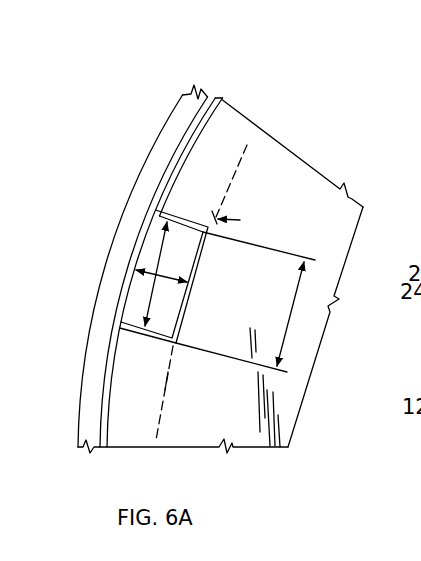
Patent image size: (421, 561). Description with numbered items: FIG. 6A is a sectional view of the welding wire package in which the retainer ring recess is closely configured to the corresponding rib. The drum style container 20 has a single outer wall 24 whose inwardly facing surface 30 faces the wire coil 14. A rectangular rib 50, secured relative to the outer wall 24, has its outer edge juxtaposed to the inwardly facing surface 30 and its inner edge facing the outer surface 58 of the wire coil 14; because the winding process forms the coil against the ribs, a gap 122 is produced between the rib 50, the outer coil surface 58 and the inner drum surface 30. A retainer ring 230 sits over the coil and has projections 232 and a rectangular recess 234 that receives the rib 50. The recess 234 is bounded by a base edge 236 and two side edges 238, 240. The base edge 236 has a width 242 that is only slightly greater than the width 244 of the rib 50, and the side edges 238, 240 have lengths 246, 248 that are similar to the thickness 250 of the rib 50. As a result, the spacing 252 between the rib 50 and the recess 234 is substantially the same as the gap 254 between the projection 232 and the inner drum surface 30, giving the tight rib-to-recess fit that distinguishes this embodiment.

The wire coil 14 is at (303, 168).
The drum style carton or container 20 is at (152, 145).
The outer wall 24 is at (183, 108).
The inwardly facing surface 30 is at (218, 98).
The rib 50 is at (140, 230).
The outer surface of the wire coil 58 is at (158, 432).
The gap 122 is at (105, 445).
The retainer ring 230 is at (272, 148).
The projection 232 is at (220, 123).
The rectangular recess 234 is at (207, 253).
The base edge 236 is at (190, 297).
The side edge 238 is at (182, 212).
The side edge 240 is at (150, 338).
The width 242 is at (283, 341).
The width 244 is at (150, 283).
The length 246 is at (158, 200).
The length 248 is at (113, 335).
The thickness 250 is at (140, 253).
The spacing 252 is at (190, 278).
The gap 254 is at (182, 147).